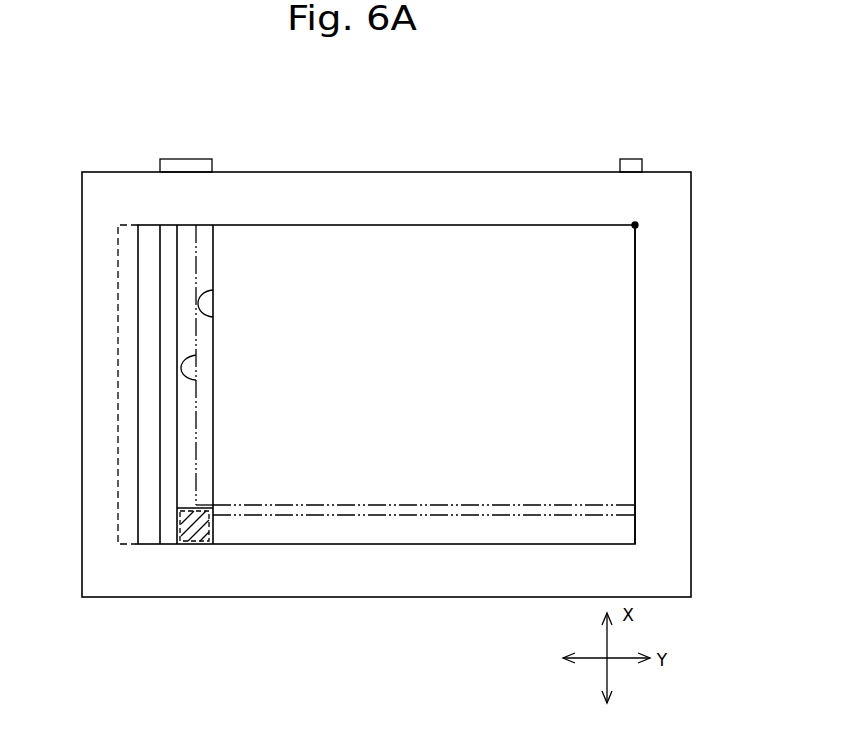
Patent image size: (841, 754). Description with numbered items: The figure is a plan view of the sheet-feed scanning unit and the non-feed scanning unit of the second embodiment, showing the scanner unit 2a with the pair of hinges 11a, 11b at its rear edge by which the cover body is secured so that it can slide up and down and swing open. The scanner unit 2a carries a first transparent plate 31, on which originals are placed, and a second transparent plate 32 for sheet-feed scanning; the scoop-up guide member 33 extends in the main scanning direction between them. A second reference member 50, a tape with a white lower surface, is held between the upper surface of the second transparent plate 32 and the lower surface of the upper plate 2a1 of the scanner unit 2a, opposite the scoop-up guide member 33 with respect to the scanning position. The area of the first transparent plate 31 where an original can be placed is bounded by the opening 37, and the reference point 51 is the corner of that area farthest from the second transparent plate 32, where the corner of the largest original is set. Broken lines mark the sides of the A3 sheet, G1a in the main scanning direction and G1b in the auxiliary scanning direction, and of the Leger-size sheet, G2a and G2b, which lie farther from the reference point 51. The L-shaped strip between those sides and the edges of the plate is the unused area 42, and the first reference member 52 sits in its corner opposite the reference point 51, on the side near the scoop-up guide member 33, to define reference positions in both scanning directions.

The scanner unit 2a is at (527, 170).
The upper plate 2a1 is at (572, 215).
The hinge 11a is at (180, 165).
The hinge 11b is at (633, 168).
The first transparent plate 31 is at (380, 282).
The second transparent plate 32 is at (150, 298).
The scoop-up guide member 33 is at (167, 238).
The opening 37 is at (633, 338).
The unused area 42 is at (185, 430).
The second reference member 50 is at (118, 387).
The reference point 51 is at (635, 225).
The first reference member 52 is at (191, 550).
The side of A3 original sheet G1a is at (213, 317).
The side of Leger-size original sheet G2a is at (196, 380).
The side of A3 original sheet G1b is at (472, 517).
The side of Leger-size original sheet G2b is at (342, 504).